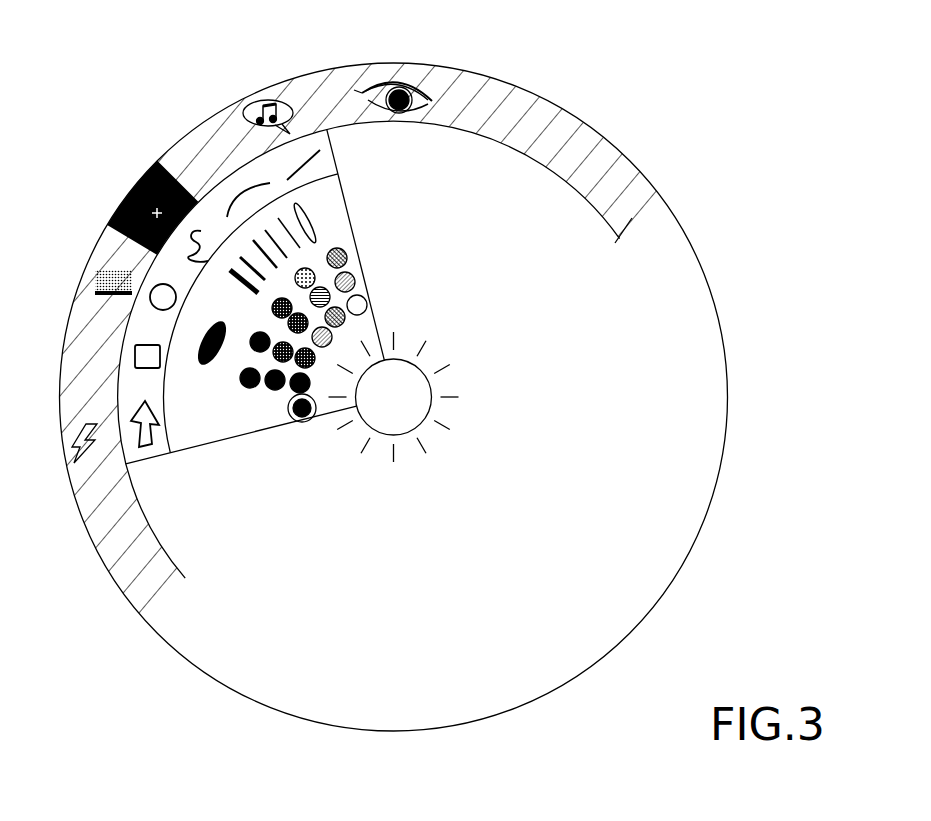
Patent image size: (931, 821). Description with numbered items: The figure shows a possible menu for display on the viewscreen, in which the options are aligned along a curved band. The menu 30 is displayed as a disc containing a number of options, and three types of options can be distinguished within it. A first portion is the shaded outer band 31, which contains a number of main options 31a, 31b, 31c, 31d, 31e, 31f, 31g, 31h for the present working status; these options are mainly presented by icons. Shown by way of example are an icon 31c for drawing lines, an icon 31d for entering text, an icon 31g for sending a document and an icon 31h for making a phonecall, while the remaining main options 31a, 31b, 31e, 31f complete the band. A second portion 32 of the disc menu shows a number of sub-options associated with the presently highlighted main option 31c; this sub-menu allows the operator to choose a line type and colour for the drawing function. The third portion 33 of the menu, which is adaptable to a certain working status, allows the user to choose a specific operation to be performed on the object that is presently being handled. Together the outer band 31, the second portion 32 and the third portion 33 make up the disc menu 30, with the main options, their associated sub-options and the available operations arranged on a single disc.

The menu 30 is at (553, 80).
The shaded outer band 31 is at (602, 148).
The main option 31a is at (63, 423).
The main option 31b is at (97, 270).
The icon for drawing lines 31c is at (120, 202).
The icon for entering text 31d is at (200, 132).
The main option 31e is at (270, 88).
The main option 31f is at (395, 77).
The icon for sending a document 31g is at (547, 115).
The icon for making a phonecall 31h is at (638, 180).
The second portion 32 is at (325, 164).
The third portion 33 is at (530, 493).